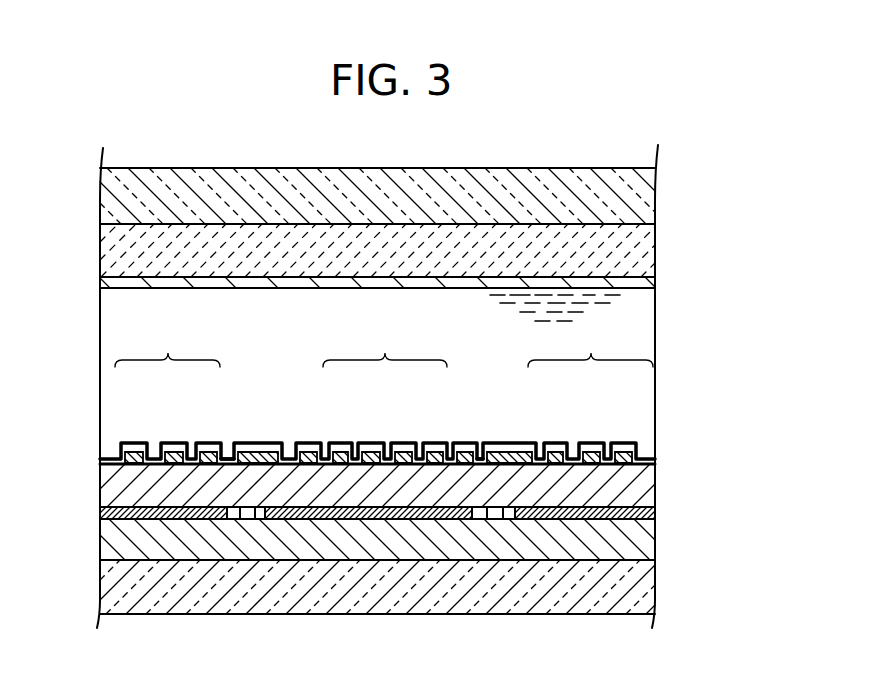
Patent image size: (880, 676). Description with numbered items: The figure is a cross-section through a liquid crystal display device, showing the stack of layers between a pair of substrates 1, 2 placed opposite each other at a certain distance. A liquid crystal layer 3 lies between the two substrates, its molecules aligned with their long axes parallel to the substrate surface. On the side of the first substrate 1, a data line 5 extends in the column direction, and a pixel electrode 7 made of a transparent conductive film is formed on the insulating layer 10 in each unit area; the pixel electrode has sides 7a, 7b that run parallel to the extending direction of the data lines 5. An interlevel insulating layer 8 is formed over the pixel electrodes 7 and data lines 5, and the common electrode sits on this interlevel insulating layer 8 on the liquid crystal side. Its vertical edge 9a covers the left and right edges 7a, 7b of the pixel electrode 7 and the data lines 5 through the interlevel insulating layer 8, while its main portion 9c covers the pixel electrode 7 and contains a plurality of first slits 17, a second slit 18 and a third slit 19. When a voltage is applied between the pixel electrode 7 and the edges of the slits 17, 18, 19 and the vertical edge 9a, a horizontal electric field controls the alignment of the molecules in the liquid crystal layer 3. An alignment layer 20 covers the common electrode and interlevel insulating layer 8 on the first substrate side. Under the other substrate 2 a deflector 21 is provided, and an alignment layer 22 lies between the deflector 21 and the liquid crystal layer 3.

The first substrate 1 is at (653, 600).
The second substrate 2 is at (655, 200).
The liquid crystal layer 3 is at (648, 325).
The data line 5 is at (700, 470).
The pixel electrode 7 is at (628, 518).
The side of pixel electrode 7a is at (518, 499).
The side of pixel electrode 7b is at (473, 499).
The interlevel insulating layer 8 is at (660, 490).
The vertical edge of common electrode 9a is at (507, 440).
The main portion of common electrode 9c is at (384, 346).
The insulating layer 10 is at (655, 547).
The first slit 17 is at (640, 440).
The second slit 18 is at (545, 438).
The third slit 19 is at (482, 440).
The alignment layer 20 is at (662, 455).
The deflector 21 is at (646, 249).
The alignment layer 22 is at (655, 282).